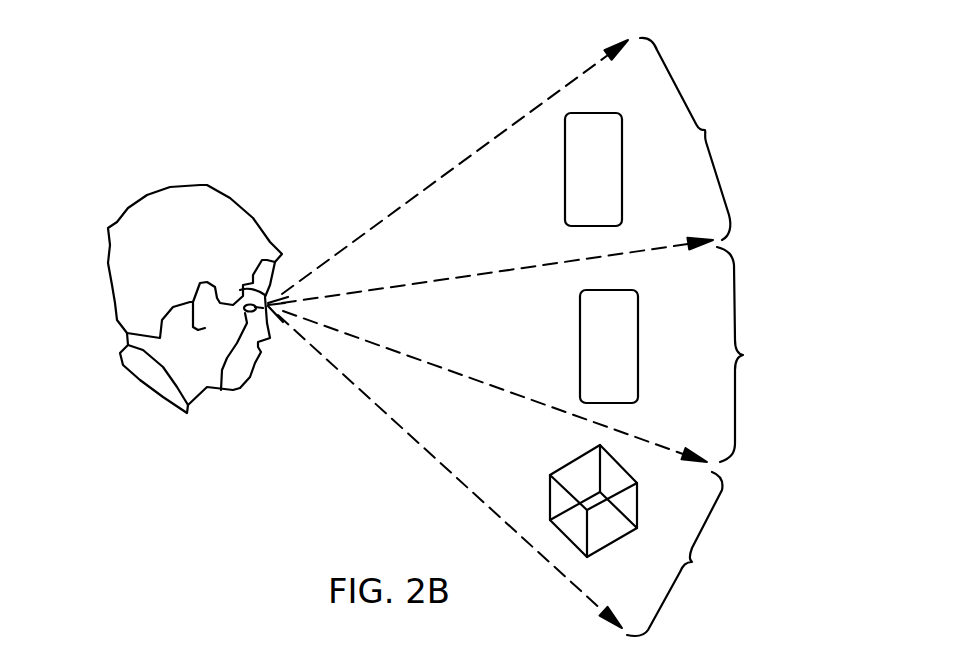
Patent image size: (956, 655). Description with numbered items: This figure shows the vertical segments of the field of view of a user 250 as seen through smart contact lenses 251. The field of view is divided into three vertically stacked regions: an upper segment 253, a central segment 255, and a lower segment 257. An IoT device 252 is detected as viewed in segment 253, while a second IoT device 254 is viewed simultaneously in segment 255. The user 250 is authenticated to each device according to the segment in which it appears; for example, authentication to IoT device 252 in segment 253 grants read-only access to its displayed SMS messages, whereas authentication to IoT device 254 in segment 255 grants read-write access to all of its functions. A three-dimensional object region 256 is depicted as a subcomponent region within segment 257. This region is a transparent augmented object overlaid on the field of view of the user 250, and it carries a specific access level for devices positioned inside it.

The user 250 is at (108, 264).
The smart contact lenses 251 is at (221, 390).
The IoT device 252 is at (565, 180).
The segment 253 is at (705, 130).
The IoT device 254 is at (580, 347).
The segment 255 is at (743, 355).
The three-dimensional object region 256 is at (568, 463).
The segment 257 is at (692, 562).